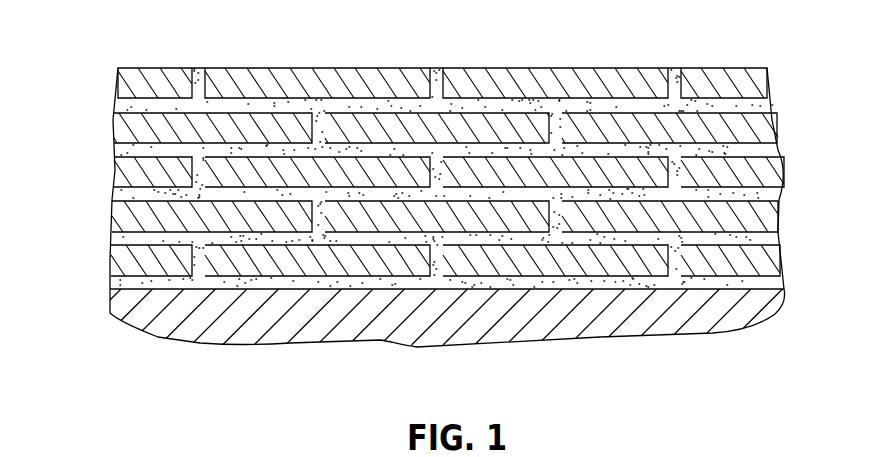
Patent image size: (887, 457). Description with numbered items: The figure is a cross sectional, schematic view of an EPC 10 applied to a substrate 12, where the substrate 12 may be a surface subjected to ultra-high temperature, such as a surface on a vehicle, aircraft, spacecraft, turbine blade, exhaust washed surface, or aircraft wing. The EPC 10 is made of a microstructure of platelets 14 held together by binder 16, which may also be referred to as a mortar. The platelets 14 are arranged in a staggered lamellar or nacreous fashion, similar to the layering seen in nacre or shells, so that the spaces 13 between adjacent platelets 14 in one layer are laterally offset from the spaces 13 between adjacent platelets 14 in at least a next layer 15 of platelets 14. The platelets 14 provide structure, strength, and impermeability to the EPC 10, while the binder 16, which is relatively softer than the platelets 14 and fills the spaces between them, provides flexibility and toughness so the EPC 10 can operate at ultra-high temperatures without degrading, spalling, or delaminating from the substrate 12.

The EPC 10 is at (727, 50).
The substrate 12 is at (710, 312).
The spaces 13 is at (200, 163).
The platelets 14 is at (305, 78).
The next layer 15 is at (98, 217).
The binder 16 is at (437, 68).